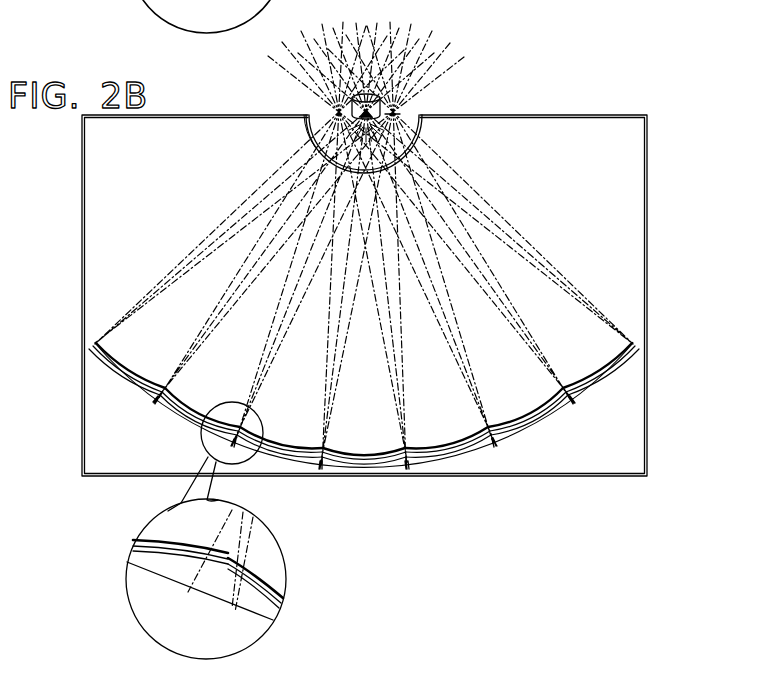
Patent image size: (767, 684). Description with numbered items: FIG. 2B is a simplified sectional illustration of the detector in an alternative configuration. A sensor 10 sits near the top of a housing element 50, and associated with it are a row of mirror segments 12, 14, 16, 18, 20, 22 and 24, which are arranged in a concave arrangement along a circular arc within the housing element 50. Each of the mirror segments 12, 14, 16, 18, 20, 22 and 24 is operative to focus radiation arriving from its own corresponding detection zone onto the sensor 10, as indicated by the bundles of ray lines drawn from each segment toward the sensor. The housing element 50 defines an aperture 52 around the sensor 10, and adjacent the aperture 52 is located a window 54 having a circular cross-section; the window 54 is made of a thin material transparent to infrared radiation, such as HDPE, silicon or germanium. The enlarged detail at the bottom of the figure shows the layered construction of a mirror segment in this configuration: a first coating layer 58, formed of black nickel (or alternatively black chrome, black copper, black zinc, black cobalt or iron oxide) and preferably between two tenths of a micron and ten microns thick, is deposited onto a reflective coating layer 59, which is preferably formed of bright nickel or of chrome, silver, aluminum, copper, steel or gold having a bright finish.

The sensor 10 is at (355, 99).
The mirror segment 12 is at (128, 366).
The mirror segment 14 is at (203, 422).
The mirror segment 16 is at (284, 447).
The mirror segment 18 is at (370, 456).
The mirror segment 20 is at (426, 448).
The mirror segment 22 is at (535, 420).
The mirror segment 24 is at (603, 368).
The housing element 50 is at (647, 194).
The aperture 52 is at (420, 118).
The window 54 is at (313, 139).
The first coating layer 58 is at (158, 541).
The reflective coating layer 59 is at (272, 588).